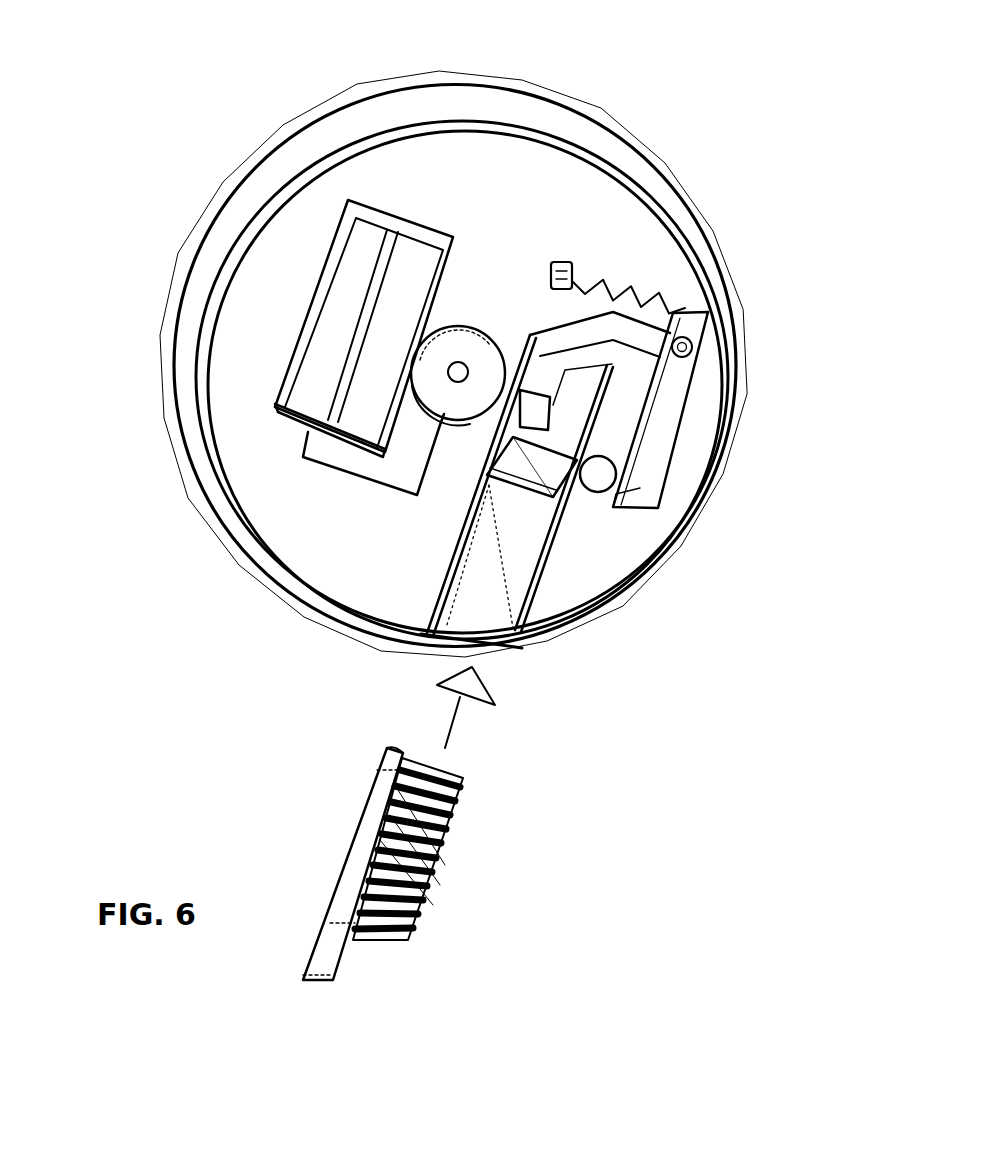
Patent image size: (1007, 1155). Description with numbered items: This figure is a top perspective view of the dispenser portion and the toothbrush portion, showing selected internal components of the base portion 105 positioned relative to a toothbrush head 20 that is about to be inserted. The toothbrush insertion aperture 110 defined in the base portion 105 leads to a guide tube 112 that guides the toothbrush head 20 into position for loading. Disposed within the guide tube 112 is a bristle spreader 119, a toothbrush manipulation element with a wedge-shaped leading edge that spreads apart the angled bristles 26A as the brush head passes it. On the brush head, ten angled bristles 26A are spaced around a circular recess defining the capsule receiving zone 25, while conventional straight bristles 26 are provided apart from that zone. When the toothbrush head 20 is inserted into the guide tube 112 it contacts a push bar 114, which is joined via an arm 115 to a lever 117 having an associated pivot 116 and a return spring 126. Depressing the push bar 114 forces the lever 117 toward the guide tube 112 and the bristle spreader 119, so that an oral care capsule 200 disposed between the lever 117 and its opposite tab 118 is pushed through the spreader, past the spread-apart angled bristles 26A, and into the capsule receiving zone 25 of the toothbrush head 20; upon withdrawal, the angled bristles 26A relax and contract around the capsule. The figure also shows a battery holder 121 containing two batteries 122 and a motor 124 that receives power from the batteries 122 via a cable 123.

The base portion 105 is at (243, 163).
The toothbrush insertion aperture 110 is at (440, 650).
The guide tube 112 is at (515, 592).
The push bar 114 is at (490, 450).
The arm 115 is at (577, 347).
The pivot 116 is at (694, 347).
The lever 117 is at (660, 422).
The tab 118 is at (672, 492).
The bristle spreader 119 is at (601, 498).
The battery holder 121 is at (278, 417).
The batteries 122 is at (372, 352).
The cable 123 is at (310, 462).
The motor 124 is at (430, 377).
The return spring 126 is at (628, 283).
The oral care capsule 200 is at (572, 500).
The toothbrush head 20 is at (320, 943).
The capsule receiving zone 25 is at (367, 842).
The straight bristles 26 is at (405, 945).
The angled bristles 26A is at (435, 868).